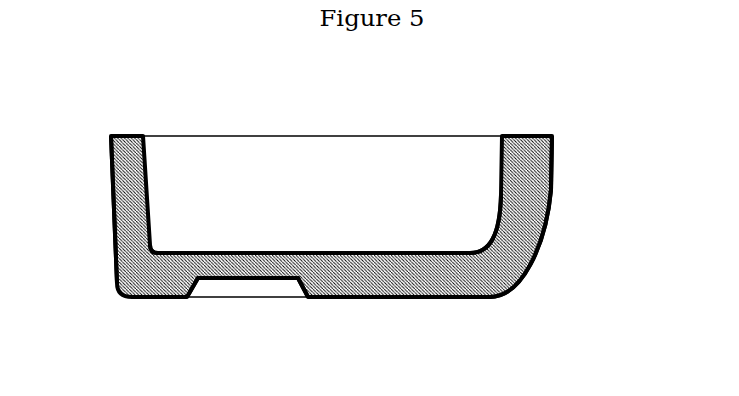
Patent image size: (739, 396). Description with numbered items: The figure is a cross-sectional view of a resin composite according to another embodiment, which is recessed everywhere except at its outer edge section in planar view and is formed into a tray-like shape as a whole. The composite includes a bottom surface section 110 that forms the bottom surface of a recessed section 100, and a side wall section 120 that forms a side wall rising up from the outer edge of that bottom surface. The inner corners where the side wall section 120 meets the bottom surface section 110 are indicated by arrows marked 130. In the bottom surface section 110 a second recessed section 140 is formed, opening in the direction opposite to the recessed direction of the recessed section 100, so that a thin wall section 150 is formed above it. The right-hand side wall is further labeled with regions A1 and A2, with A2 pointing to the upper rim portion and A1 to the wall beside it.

The recessed section 100 is at (280, 131).
The bottom surface section 110 is at (322, 253).
The side wall section 120 is at (145, 173).
The inner corner portion 130 is at (166, 242).
The second recessed section 140 is at (239, 290).
The thin wall section 150 is at (262, 253).
The side wall region A1 is at (553, 182).
The rim region of side wall A2 is at (532, 136).